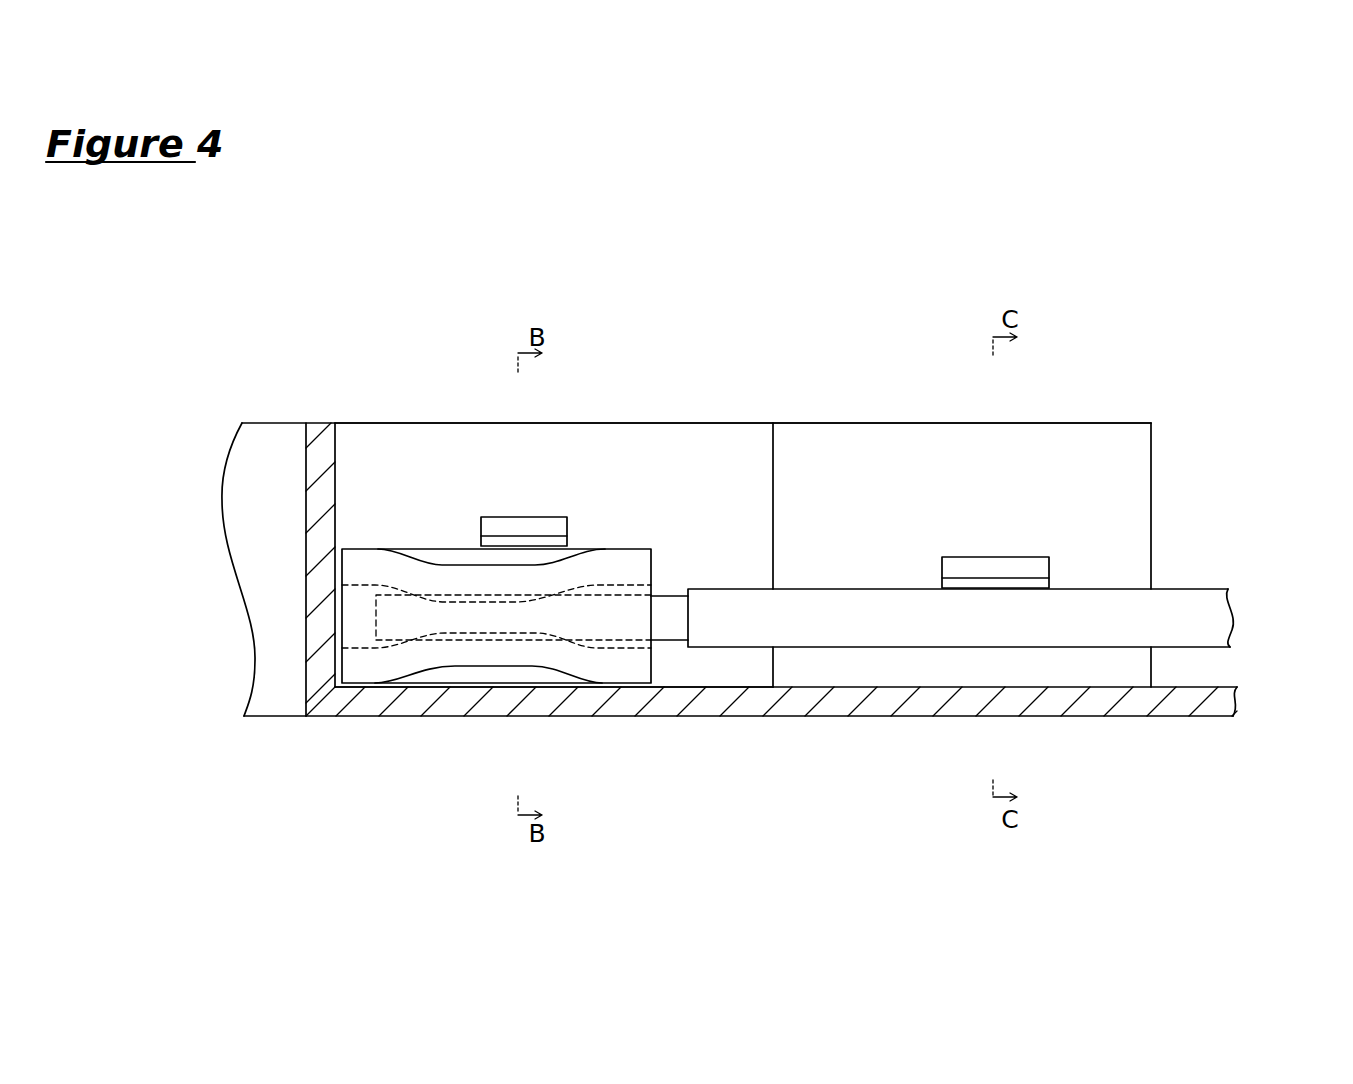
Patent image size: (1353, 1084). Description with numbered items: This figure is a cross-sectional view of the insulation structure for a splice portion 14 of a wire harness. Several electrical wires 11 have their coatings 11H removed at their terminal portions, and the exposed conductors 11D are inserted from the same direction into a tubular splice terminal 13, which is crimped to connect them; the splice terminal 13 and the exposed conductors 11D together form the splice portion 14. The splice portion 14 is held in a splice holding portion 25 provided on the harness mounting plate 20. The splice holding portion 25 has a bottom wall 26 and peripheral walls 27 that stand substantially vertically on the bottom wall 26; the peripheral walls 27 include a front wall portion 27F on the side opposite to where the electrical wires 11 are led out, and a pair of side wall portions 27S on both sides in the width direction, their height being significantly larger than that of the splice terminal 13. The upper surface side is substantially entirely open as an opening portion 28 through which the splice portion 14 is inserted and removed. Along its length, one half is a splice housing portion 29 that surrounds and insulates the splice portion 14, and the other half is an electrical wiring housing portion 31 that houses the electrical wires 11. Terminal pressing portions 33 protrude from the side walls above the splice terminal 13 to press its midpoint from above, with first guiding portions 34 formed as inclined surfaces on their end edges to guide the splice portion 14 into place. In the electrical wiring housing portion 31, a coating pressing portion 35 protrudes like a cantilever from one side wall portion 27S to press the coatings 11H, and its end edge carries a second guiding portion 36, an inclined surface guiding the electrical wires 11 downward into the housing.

The electrical wire 11 is at (1216, 613).
The conductor 11D is at (482, 623).
The coating 11H is at (748, 628).
The splice terminal 13 is at (598, 658).
The splice portion 14 is at (649, 491).
The harness mounting plate 20 is at (874, 705).
The splice holding portion 25 is at (813, 262).
The bottom wall 26 is at (670, 705).
The peripheral wall 27 is at (367, 329).
The front wall portion 27F is at (320, 492).
The side wall portion 27S is at (368, 473).
The opening portion 28 is at (752, 437).
The splice housing portion 29 is at (587, 471).
The electrical wiring housing portion 31 is at (882, 463).
The terminal pressing portion 33 is at (495, 518).
The first guiding portion 34 is at (543, 527).
The coating pressing portion 35 is at (1013, 558).
The second guiding portion 36 is at (978, 558).